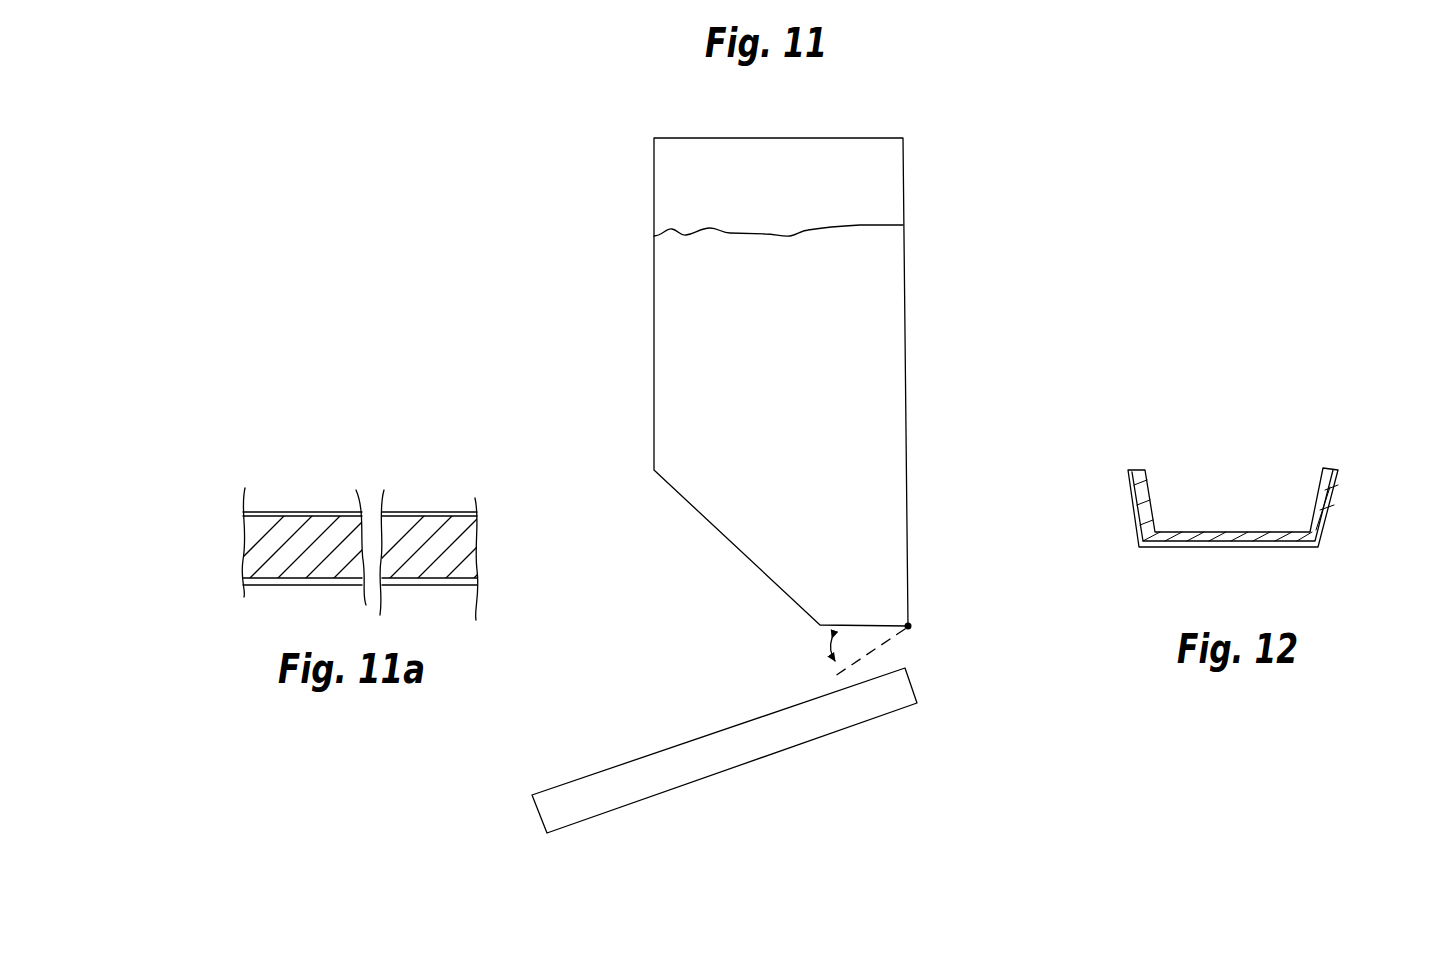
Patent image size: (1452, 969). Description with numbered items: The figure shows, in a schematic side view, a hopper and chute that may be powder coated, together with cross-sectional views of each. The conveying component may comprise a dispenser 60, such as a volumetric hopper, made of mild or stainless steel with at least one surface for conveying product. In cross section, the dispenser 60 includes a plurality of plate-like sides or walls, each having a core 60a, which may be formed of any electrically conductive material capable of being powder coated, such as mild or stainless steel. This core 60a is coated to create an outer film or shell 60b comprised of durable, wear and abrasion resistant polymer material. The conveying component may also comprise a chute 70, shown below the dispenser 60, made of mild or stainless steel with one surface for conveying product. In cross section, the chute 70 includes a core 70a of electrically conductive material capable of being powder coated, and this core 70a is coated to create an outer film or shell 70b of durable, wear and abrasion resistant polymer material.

In FIG. 11, the dispenser 60 is at (922, 279).
In FIG. 11a, the dispenser 60 is at (387, 540).
In FIG. 11a, the core 60a is at (465, 557).
In FIG. 11a, the outer film or shell 60b is at (487, 513).
In FIG. 11, the chute 70 is at (786, 764).
In FIG. 12, the core 70a is at (1308, 528).
In FIG. 12, the outer film or shell 70b is at (1317, 488).